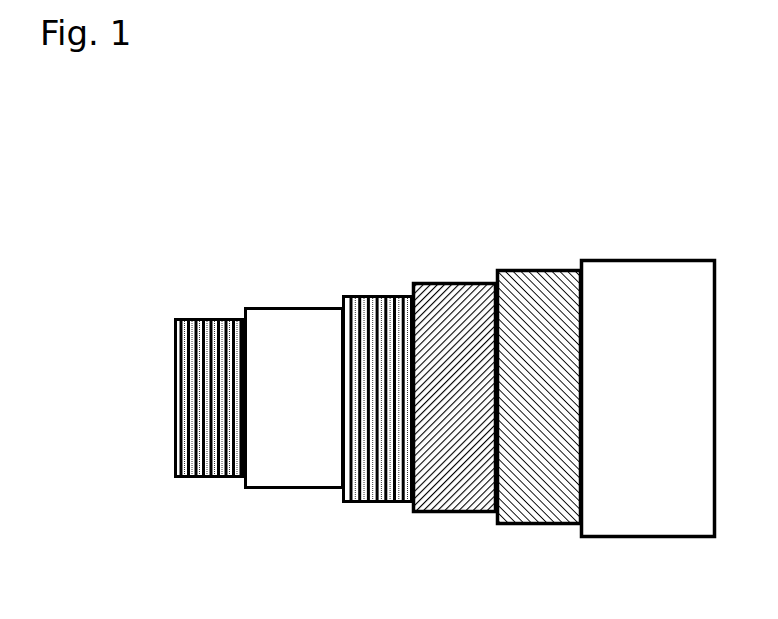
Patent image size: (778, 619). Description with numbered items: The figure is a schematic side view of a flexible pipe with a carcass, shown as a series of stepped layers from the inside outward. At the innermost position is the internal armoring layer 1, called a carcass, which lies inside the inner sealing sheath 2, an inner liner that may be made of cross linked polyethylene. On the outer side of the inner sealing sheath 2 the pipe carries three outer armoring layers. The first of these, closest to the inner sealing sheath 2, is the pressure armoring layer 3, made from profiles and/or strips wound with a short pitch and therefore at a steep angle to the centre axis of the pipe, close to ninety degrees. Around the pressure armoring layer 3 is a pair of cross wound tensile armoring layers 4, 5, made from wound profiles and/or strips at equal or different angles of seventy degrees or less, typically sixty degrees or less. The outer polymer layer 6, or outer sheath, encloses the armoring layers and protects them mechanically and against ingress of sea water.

The internal armoring layer 1 is at (202, 290).
The inner sealing sheath 2 is at (296, 278).
The pressure armoring layer 3 is at (392, 278).
The tensile armoring layer 4 is at (463, 255).
The tensile armoring layer 5 is at (546, 253).
The outer polymer layer 6 is at (665, 216).